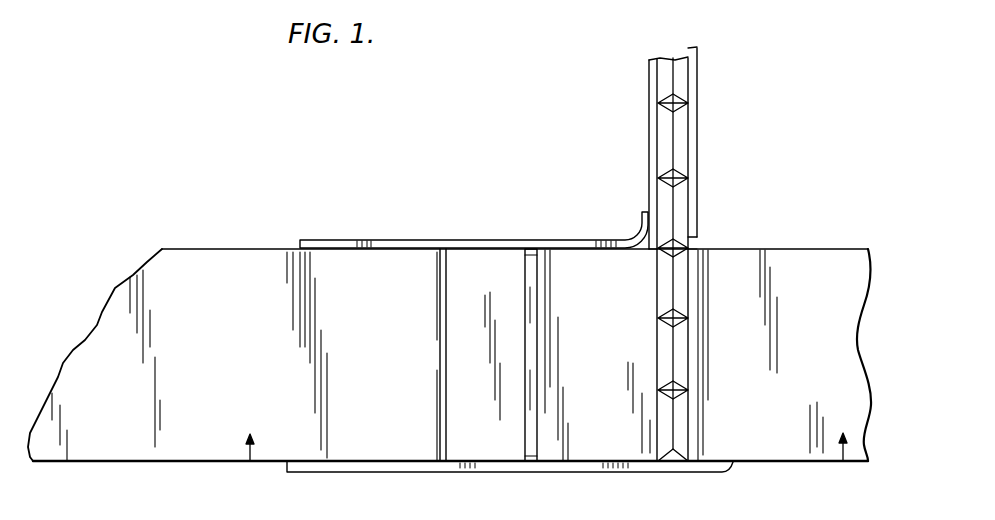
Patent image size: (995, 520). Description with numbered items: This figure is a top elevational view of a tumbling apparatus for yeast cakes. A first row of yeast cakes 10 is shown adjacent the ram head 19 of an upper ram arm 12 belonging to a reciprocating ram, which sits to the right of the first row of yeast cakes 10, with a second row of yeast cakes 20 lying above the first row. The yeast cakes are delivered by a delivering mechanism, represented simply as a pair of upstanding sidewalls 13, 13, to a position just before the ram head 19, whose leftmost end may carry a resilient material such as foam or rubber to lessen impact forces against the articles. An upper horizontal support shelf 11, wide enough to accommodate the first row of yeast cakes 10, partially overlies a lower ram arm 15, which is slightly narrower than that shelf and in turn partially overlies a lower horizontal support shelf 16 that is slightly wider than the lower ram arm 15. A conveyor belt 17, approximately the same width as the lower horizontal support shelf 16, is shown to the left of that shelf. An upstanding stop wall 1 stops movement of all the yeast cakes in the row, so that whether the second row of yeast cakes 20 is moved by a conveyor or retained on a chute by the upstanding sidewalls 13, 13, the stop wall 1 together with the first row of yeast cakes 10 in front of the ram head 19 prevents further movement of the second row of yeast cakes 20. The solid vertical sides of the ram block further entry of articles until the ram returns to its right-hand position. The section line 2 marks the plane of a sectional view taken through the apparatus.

The upstanding stop wall 1 is at (338, 262).
The section line 2- 2 is at (546, 460).
The first row of yeast cakes 10 is at (663, 270).
The upper horizontal support shelf 11 is at (584, 409).
The upper ram arm 12 is at (807, 368).
The upstanding sidewalls 13 is at (653, 83).
The lower ram arm 15 is at (527, 273).
The lower horizontal support shelf 16 is at (459, 421).
The conveyor belt 17 is at (286, 381).
The ram head 19 is at (710, 243).
The second row of yeast cakes 20 is at (663, 200).